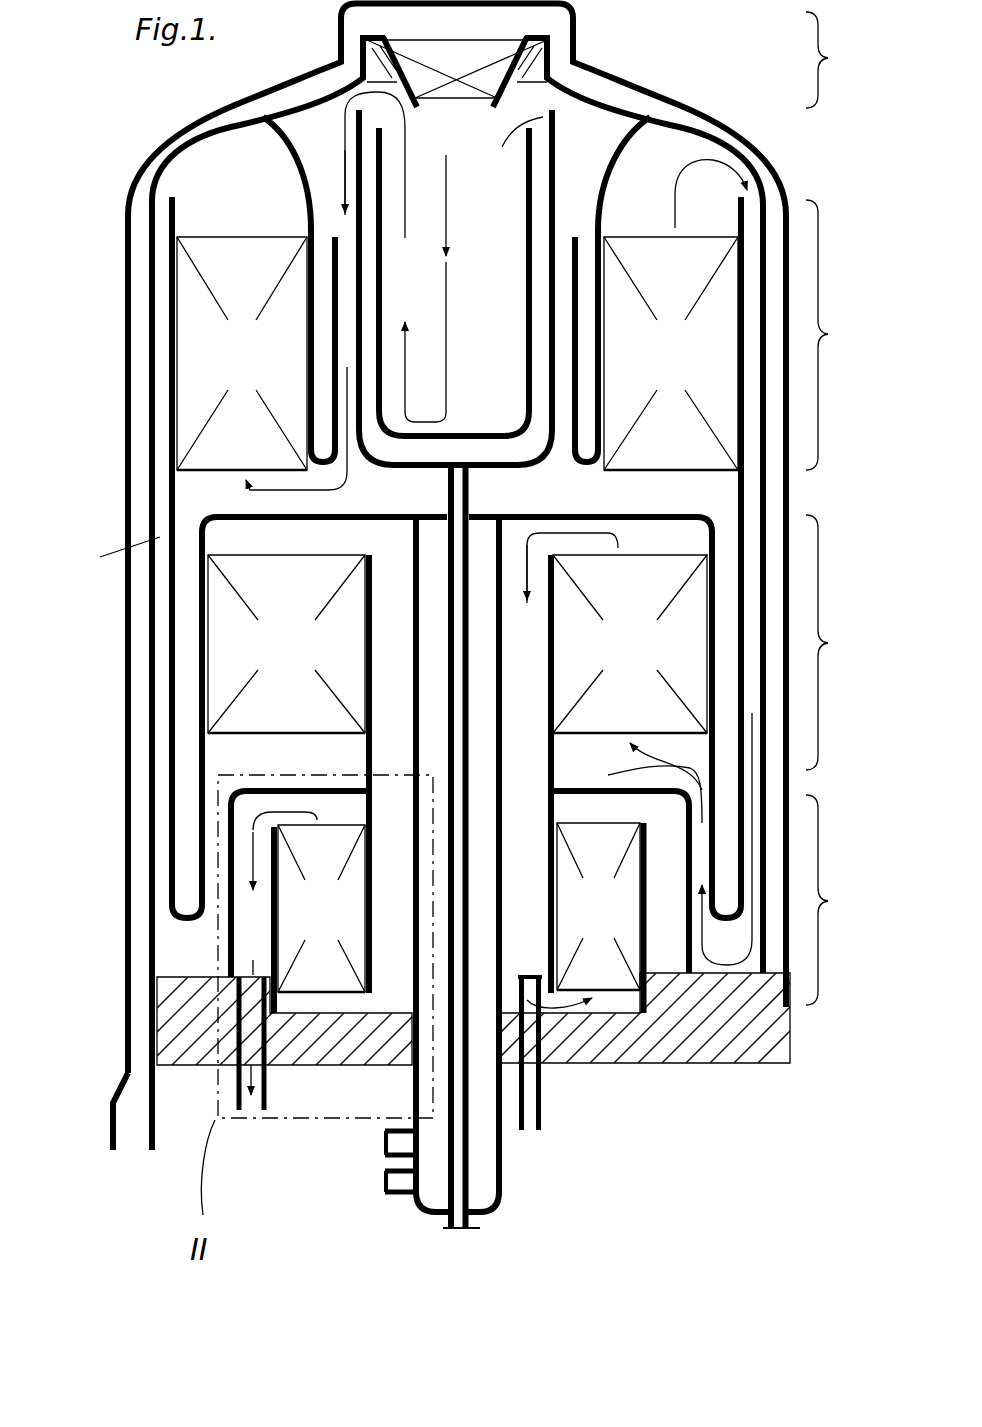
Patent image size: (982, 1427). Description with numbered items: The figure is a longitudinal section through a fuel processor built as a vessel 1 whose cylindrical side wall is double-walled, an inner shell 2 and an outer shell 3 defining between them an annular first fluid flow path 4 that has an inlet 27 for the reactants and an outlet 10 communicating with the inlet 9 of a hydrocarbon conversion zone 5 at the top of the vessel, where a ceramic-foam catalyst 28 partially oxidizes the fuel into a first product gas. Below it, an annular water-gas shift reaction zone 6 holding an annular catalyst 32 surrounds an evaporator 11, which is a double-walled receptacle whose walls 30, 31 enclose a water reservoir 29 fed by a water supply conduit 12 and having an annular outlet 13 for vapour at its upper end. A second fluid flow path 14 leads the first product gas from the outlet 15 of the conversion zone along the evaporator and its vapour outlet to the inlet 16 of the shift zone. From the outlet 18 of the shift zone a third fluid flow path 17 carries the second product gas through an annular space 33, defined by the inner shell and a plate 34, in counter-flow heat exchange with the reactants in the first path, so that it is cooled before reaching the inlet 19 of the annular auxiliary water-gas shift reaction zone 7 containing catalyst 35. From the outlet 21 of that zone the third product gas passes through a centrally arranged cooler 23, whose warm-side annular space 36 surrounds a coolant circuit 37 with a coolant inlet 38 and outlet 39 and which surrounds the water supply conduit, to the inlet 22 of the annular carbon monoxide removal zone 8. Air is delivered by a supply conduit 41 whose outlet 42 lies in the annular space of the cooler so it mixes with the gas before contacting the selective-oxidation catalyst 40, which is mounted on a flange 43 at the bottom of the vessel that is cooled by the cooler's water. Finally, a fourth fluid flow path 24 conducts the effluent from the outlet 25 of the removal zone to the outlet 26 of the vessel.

The vessel 1 is at (130, 123).
The inner shell 2 is at (233, 122).
The outer shell 3 is at (140, 147).
The first fluid flow path 4 is at (138, 178).
The hydrocarbon conversion zone 5 is at (834, 60).
The water-gas shift reaction zone 6 is at (836, 335).
The auxiliary water-gas shift reaction zone 7 is at (839, 642).
The carbon monoxide removal zone 8 is at (839, 900).
The inlet of the hydrocarbon conversion zone 9 is at (457, 22).
The outlet of the first fluid flow path 10 is at (378, 22).
The evaporator 11 is at (512, 283).
The water supply conduit 12 is at (460, 1155).
The outlet for vapour 13 is at (461, 276).
The second fluid flow path 14 is at (345, 485).
The outlet of the hydrocarbon conversion zone 15 is at (455, 86).
The inlet of the water-gas shift reaction zone 16 is at (276, 438).
The third fluid flow path 17 is at (533, 513).
The outlet of the water-gas shift reaction zone 18 is at (484, 289).
The inlet of the auxiliary water-gas shift reaction zone 19 is at (343, 856).
The outlet of the auxiliary water-gas shift reaction zone 21 is at (324, 540).
The inlet of the carbon monoxide removal zone 22 is at (300, 997).
The cooler 23 is at (552, 1255).
The fourth fluid flow path 24 is at (253, 855).
The outlet of the carbon monoxide removal zone 25 is at (620, 882).
The outlet of the vessel 26 is at (255, 1108).
The inlet of the first fluid path 27 is at (133, 1137).
The catalyst 28 is at (487, 77).
The water reservoir 29 is at (535, 425).
The wall of the evaporator 30 is at (547, 372).
The wall of the evaporator 31 is at (525, 328).
The catalyst 32 is at (260, 375).
The annular space 33 is at (106, 558).
The plate 34 is at (168, 500).
The catalyst 35 is at (312, 669).
The annular space 36 is at (390, 680).
The coolant circuit 37 is at (485, 599).
The inlet for coolant 38 is at (393, 1134).
The outlet for coolant 39 is at (393, 1186).
The catalyst 40 is at (349, 943).
The supply conduit 41 is at (530, 1092).
The outlet of the air supply conduit 42 is at (585, 1012).
The flange 43 is at (713, 1022).